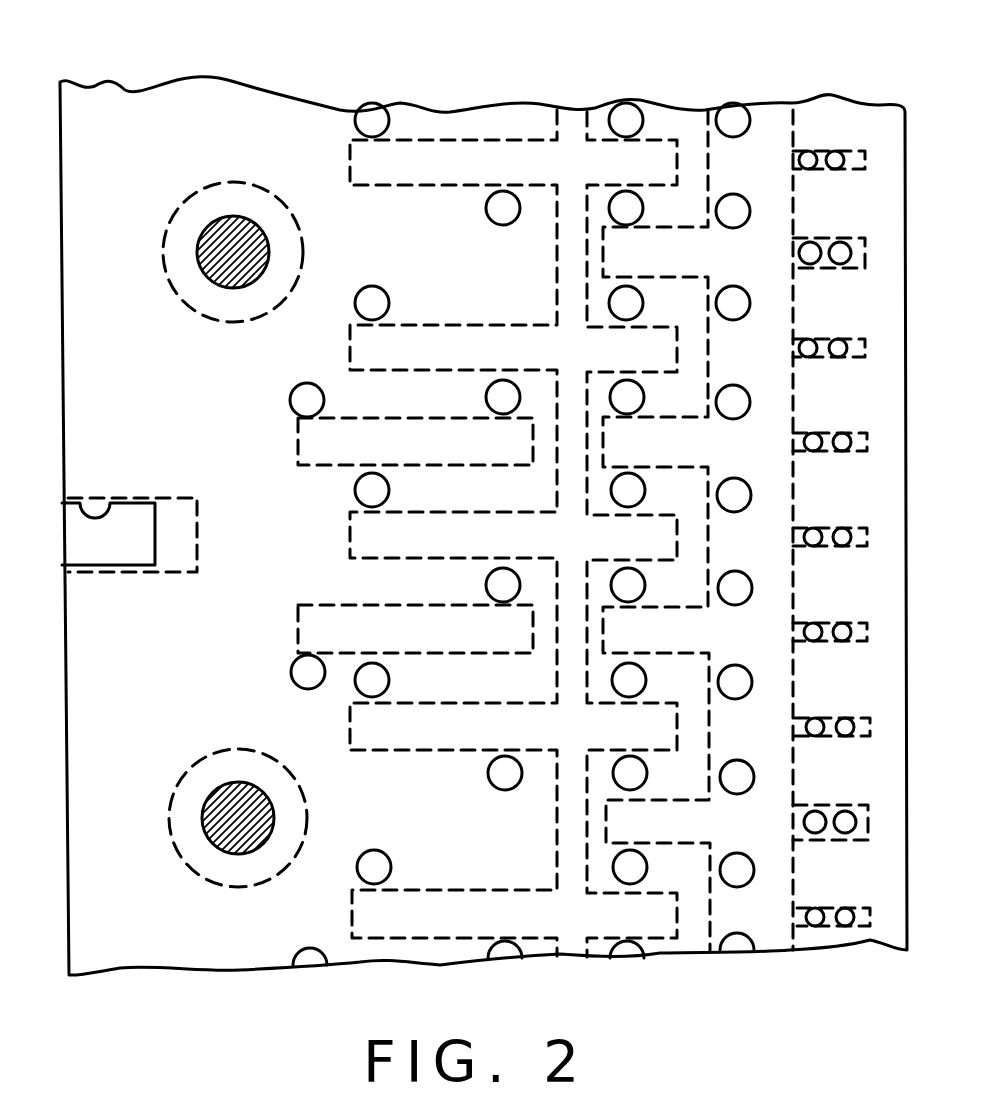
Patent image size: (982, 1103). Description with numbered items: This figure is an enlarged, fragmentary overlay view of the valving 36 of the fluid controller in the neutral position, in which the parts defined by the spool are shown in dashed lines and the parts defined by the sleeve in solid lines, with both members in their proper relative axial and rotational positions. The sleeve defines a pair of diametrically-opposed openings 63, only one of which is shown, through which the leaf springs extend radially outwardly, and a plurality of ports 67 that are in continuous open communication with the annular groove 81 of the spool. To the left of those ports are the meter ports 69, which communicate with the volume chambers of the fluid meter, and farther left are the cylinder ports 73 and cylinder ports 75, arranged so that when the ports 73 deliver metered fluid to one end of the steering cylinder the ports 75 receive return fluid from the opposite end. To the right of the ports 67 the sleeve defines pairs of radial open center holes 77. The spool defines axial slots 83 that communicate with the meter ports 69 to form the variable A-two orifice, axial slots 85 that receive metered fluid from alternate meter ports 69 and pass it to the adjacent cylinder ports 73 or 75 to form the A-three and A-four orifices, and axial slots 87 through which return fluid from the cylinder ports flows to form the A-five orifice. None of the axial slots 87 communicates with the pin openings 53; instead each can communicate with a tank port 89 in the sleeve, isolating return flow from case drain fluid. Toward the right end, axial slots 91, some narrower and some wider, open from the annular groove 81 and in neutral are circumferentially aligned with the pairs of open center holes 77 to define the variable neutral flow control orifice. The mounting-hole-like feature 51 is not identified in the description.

The valving 36 is at (333, 92).
The mounting hole 51 is at (243, 253).
The pin openings 53 is at (178, 212).
The openings 63 is at (108, 500).
The ports 67 is at (743, 398).
The meter ports 69 is at (622, 118).
The cylinder ports 73 is at (500, 215).
The cylinder ports 75 is at (372, 118).
The open center holes 77 is at (812, 264).
The annular groove 81 is at (765, 170).
The axial slots 83 is at (648, 533).
The axial slots 85 is at (448, 170).
The axial slots 87 is at (462, 443).
The tank port 89 is at (300, 395).
The axial slots 91 is at (862, 442).